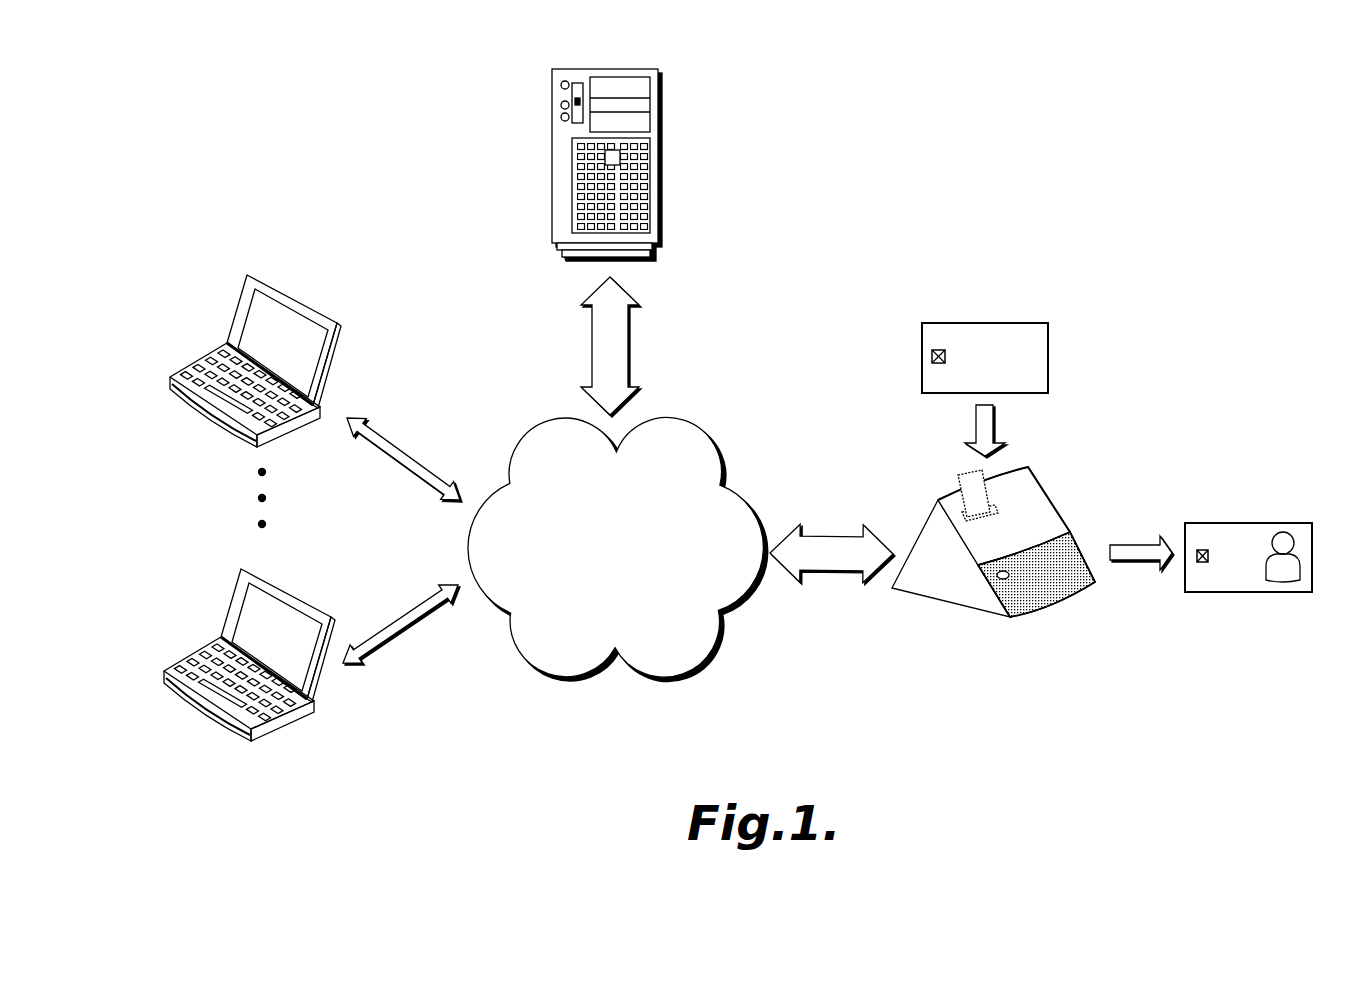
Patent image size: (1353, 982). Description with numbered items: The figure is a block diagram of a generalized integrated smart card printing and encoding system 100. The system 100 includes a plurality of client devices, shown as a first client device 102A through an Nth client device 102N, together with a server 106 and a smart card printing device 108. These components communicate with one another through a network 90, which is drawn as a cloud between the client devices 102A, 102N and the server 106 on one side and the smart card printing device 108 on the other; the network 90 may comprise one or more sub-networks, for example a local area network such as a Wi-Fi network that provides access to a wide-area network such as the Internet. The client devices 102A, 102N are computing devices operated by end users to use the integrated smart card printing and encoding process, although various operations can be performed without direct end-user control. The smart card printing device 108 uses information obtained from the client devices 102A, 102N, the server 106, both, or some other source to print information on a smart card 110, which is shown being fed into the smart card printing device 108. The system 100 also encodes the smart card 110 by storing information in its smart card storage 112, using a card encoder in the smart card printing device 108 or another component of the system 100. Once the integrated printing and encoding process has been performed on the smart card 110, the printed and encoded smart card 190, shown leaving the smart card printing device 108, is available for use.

The integrated smart card printing and encoding system 100 is at (236, 106).
The client device 102A is at (228, 312).
The client device 102N is at (222, 606).
The server 106 is at (665, 98).
The network 90 is at (535, 657).
The smart card 110 is at (935, 358).
The smart card storage 112 is at (948, 362).
The smart card printing device 108 is at (981, 617).
The printed and encoded smart card 190 is at (1233, 593).